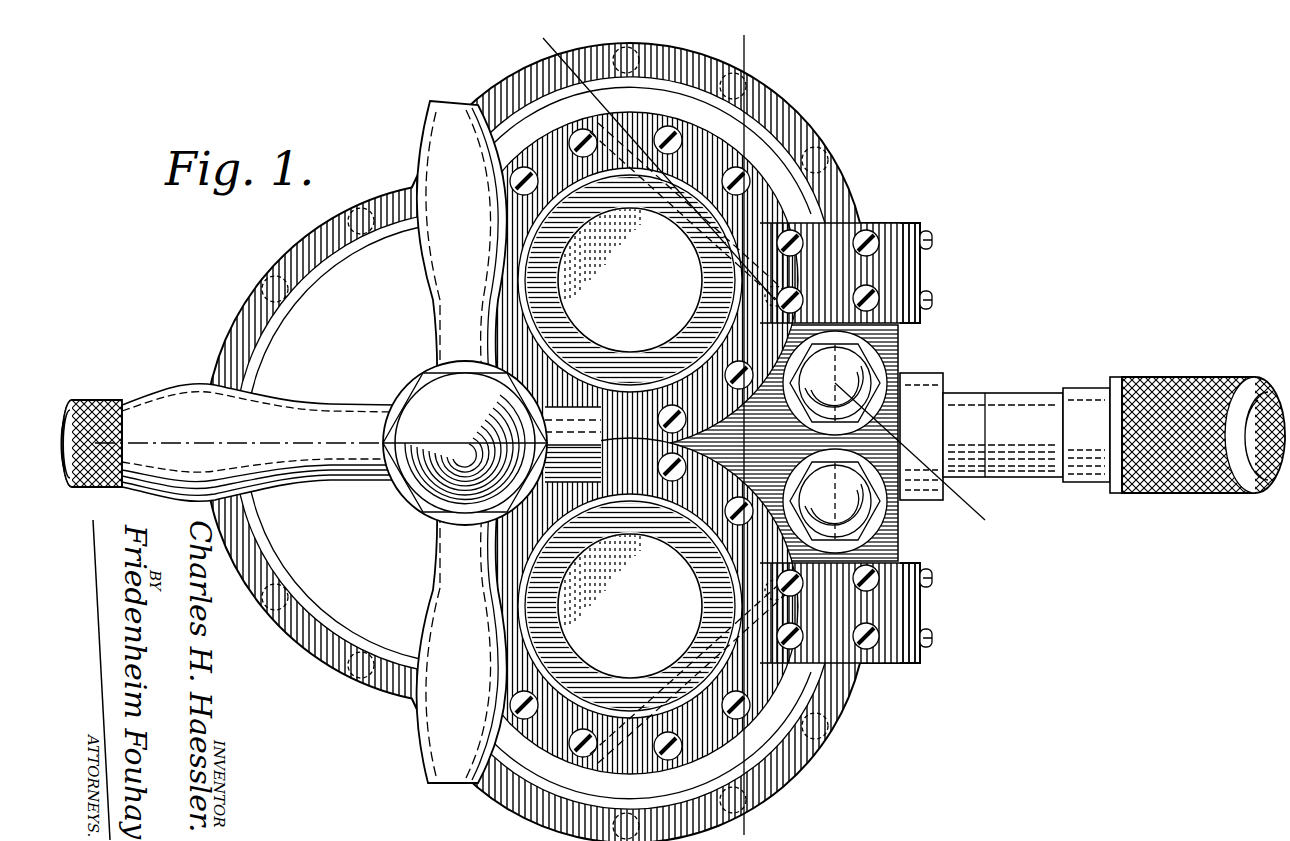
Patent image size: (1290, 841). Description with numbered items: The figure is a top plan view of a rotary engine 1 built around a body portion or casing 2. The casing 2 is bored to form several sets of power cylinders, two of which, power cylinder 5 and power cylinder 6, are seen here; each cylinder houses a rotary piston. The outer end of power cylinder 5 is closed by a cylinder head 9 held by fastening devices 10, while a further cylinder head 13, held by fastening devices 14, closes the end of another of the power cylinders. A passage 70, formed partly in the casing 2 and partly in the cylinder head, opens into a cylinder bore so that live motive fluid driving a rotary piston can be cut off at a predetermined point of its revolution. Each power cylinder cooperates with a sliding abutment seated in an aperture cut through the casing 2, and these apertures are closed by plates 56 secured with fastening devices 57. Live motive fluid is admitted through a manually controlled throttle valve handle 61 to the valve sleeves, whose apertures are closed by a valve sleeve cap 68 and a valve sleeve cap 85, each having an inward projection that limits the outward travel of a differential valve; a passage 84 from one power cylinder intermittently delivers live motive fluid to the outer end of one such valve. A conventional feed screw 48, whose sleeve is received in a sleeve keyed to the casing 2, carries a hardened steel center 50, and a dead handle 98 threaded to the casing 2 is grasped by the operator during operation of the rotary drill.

The rotary engine 1 is at (847, 190).
The body portion or casing 2 is at (87, 403).
The power cylinder 5 is at (744, 35).
The power cylinder 6 is at (550, 28).
The cylinder head 9 is at (630, 280).
The fastening devices 10 is at (730, 174).
The cylinder head 13 is at (630, 606).
The fastening devices 14 is at (728, 507).
The feed screw 48 is at (348, 442).
The hardened steel center 50 is at (465, 443).
The plates 56 is at (916, 278).
The fastening devices 57 is at (930, 237).
The throttle valve handle 61 is at (1080, 395).
The valve sleeve cap 68 is at (850, 378).
The passage 70 is at (680, 200).
The passage 84 is at (700, 547).
The valve sleeve cap 85 is at (857, 502).
The dead handle 98 is at (110, 403).